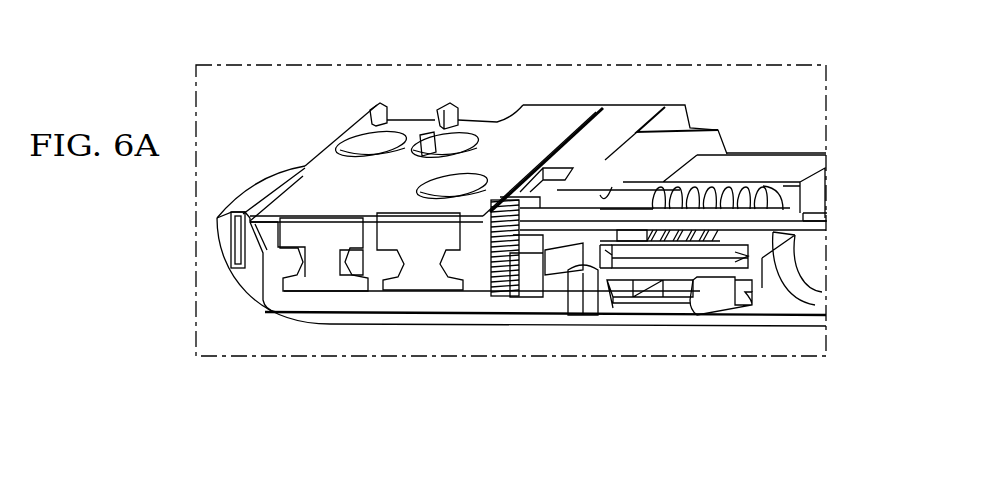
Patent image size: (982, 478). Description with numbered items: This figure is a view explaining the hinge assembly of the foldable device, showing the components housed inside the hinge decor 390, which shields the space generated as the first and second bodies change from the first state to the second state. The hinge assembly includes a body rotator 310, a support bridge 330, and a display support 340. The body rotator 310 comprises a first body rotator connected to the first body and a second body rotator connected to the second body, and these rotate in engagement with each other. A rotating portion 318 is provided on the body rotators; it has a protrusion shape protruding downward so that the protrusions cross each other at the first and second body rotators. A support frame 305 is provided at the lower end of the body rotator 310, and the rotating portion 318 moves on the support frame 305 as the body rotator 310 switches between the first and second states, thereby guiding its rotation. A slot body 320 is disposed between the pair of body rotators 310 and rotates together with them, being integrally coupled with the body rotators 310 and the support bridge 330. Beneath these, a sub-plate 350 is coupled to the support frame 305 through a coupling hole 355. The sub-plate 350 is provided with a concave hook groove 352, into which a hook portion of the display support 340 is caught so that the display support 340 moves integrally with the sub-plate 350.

The support frame 305 is at (476, 303).
The body rotator 310 is at (552, 115).
The rotating portion 318 is at (328, 263).
The slot body 320 is at (630, 115).
The support bridge 330 is at (768, 165).
The display support 340 is at (826, 221).
The sub-plate 350 is at (710, 303).
The hook groove 352 is at (748, 303).
The coupling hole 355 is at (583, 273).
The hinge decor 390 is at (537, 320).